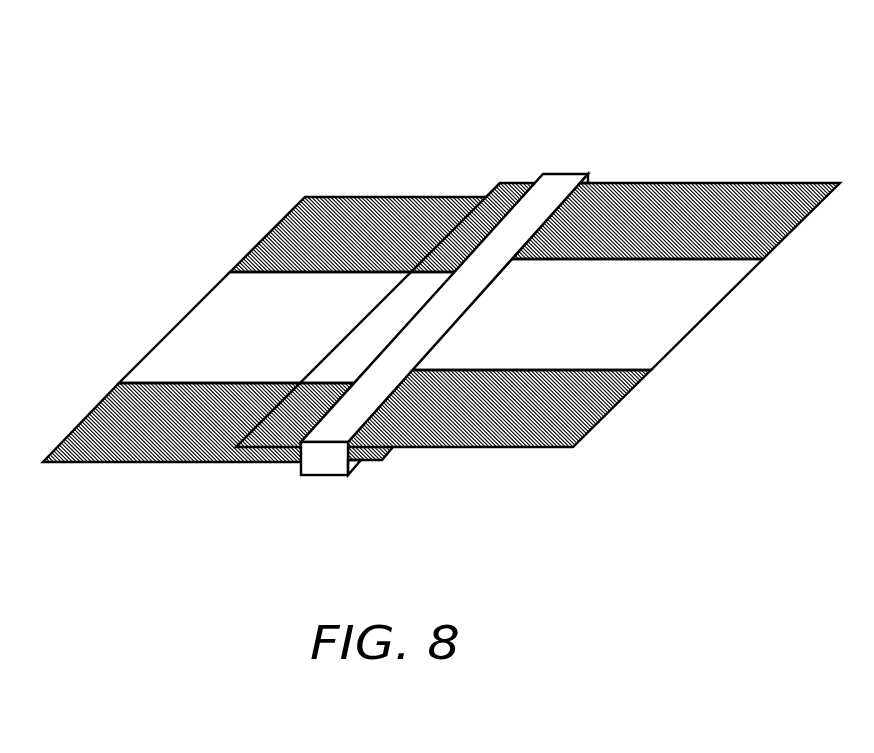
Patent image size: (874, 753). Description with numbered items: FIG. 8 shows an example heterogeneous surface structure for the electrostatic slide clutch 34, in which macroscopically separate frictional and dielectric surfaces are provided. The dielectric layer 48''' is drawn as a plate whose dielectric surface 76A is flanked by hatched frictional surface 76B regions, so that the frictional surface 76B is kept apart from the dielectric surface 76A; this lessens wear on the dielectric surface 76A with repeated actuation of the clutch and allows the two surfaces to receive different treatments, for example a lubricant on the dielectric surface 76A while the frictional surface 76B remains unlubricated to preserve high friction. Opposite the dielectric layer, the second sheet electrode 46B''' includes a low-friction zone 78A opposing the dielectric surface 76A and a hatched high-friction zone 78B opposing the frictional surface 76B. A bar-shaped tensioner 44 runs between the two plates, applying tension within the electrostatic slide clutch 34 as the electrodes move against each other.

The electrostatic slide clutch 34 is at (163, 123).
The tensioner 44 is at (561, 183).
The first plate 48''' is at (289, 322).
The second sheet electrode 46B''' is at (600, 321).
The dielectric surface 76A is at (294, 337).
The frictional surface 76B is at (391, 242).
The low-friction zone 78A is at (574, 330).
The high-friction zone 78B is at (675, 227).